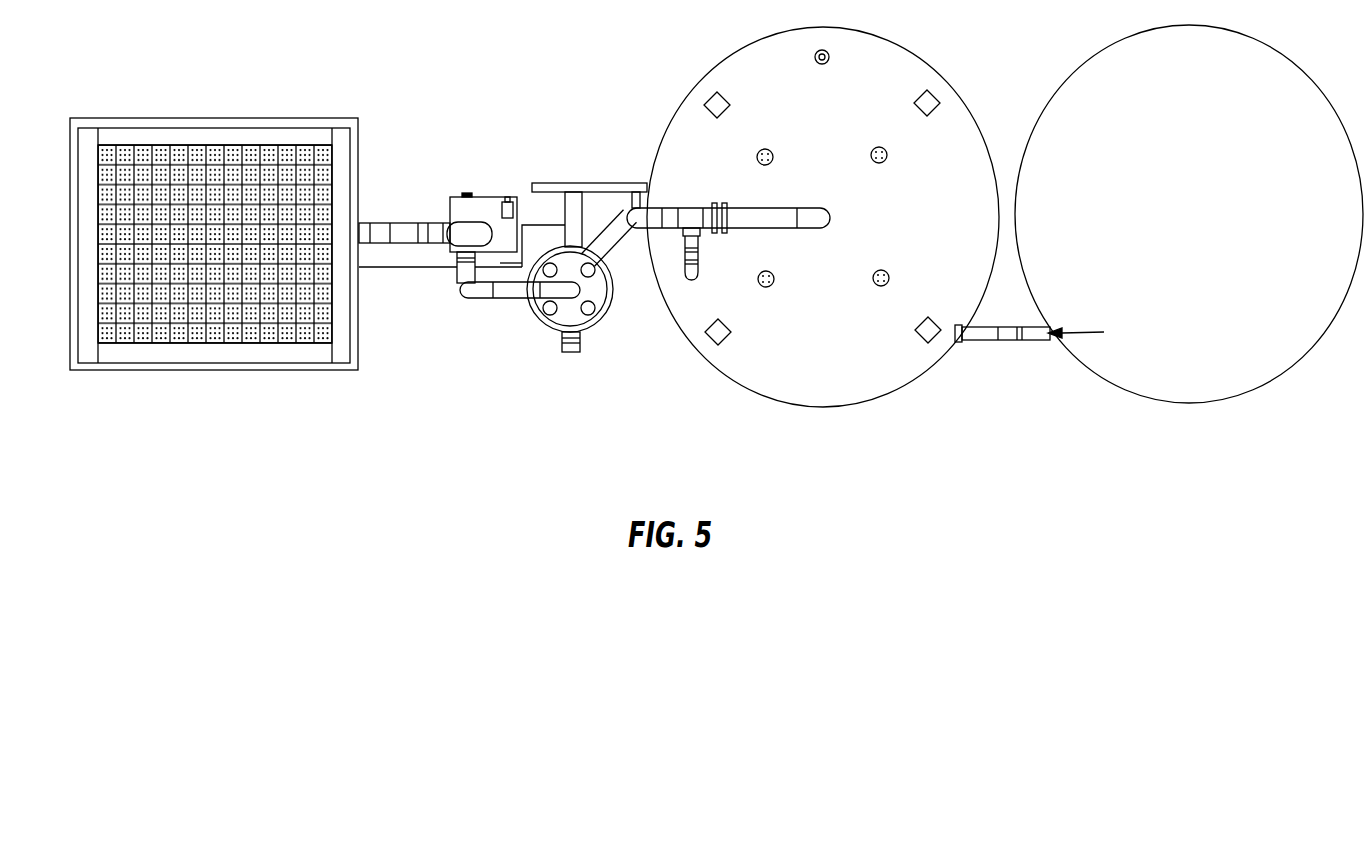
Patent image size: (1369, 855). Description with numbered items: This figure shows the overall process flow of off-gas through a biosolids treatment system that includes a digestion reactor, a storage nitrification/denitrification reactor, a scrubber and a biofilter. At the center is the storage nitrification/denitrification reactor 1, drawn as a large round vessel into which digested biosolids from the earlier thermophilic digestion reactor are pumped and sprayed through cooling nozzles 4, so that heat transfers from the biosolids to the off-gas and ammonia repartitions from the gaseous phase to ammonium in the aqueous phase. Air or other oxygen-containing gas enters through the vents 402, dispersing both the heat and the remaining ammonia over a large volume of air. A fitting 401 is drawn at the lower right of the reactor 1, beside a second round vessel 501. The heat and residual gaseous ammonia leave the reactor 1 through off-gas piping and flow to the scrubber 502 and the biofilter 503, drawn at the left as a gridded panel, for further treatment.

The storage nitrification/denitrification reactor 1 is at (748, 390).
The cooling nozzles 4 is at (879, 147).
The fitting 401 is at (957, 342).
The vents 402 is at (706, 98).
The second tank 501 is at (1265, 387).
The scrubber 502 is at (568, 354).
The biofilter 503 is at (192, 396).